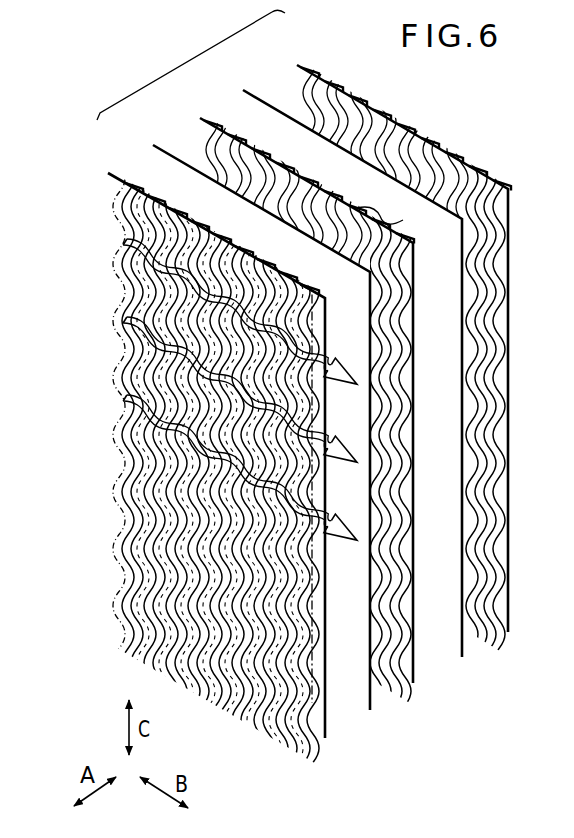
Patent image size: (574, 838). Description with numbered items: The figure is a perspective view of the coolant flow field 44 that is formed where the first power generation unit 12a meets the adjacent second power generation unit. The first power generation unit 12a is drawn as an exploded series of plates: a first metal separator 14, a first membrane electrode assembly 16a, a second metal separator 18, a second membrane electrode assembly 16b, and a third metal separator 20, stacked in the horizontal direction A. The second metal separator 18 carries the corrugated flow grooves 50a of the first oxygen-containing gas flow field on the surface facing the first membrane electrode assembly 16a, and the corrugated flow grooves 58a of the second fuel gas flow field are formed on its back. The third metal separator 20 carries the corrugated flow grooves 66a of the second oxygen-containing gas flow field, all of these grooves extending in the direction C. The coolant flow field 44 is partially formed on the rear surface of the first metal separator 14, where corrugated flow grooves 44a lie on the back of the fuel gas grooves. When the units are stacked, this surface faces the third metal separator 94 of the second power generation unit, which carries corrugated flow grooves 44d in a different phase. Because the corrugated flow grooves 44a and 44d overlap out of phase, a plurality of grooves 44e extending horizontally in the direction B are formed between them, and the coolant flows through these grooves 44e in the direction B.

The first power generation unit 12a is at (191, 65).
The first metal separator 14 is at (128, 183).
The first membrane electrode assembly 16a is at (176, 158).
The second membrane electrode assembly 16b is at (266, 102).
The second metal separator 18 is at (225, 130).
The third metal separator 20 is at (305, 86).
The coolant flow field 44 is at (126, 372).
The corrugated flow grooves 44a is at (218, 228).
The corrugated flow grooves 44d is at (128, 212).
The grooves 44e is at (337, 373).
The corrugated flow grooves 50a is at (328, 200).
The corrugated flow grooves 58a is at (397, 220).
The corrugated flow grooves 66a is at (465, 158).
The third metal separator 94 is at (128, 287).